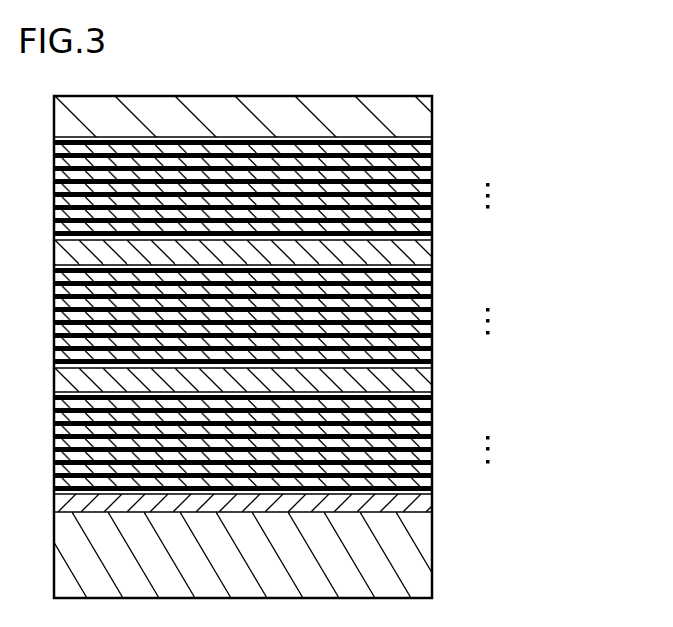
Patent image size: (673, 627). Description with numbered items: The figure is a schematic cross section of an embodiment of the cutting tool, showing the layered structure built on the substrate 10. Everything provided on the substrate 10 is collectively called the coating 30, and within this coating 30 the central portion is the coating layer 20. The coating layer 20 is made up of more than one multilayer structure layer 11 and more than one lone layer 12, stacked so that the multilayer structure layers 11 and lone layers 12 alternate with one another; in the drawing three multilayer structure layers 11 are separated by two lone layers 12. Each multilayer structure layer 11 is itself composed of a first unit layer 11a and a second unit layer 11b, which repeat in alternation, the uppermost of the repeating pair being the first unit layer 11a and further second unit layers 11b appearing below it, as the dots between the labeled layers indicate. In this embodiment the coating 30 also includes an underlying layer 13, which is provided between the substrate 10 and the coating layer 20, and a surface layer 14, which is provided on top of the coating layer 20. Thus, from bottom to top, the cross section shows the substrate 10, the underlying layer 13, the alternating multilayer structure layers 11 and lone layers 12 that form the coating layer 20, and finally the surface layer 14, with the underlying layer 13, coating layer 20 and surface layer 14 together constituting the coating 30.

The substrate 10 is at (420, 557).
The multilayer structure layer 11 is at (307, 309).
The first unit layer 11a is at (432, 142).
The second unit layer 11b is at (432, 146).
The lone layer 12 is at (432, 247).
The underlying layer 13 is at (334, 507).
The surface layer 14 is at (432, 117).
The coating layer 20 is at (334, 309).
The coating 30 is at (363, 307).